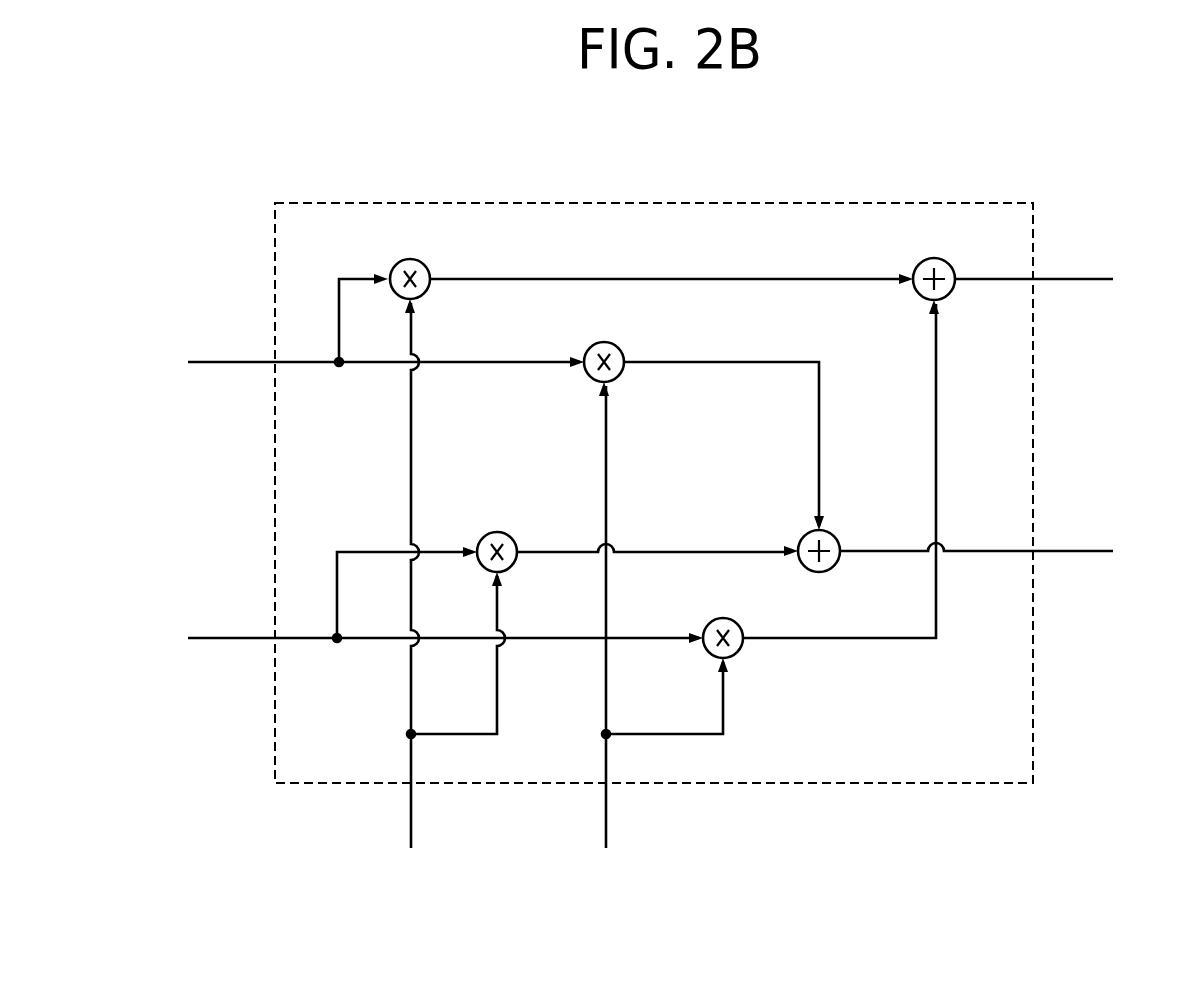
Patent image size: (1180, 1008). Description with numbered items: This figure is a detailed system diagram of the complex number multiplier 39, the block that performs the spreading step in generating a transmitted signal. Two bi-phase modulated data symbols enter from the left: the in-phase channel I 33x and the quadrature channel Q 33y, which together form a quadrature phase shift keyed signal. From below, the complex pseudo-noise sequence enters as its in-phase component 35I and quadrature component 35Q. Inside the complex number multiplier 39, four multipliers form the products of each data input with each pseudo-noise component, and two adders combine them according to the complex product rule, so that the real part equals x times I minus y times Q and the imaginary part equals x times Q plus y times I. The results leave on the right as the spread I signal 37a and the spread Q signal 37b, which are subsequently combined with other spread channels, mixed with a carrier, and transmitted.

The complex number multiplier 39 is at (984, 203).
The in-phase channel I 33x is at (359, 328).
The quadrature channel Q 33y is at (418, 602).
The in-phase component of complex pseudo-noise sequence 35I is at (449, 597).
The quadrature component of complex pseudo-noise sequence 35Q is at (655, 638).
The spread I signal 37a is at (1065, 279).
The spread Q signal 37b is at (1008, 551).